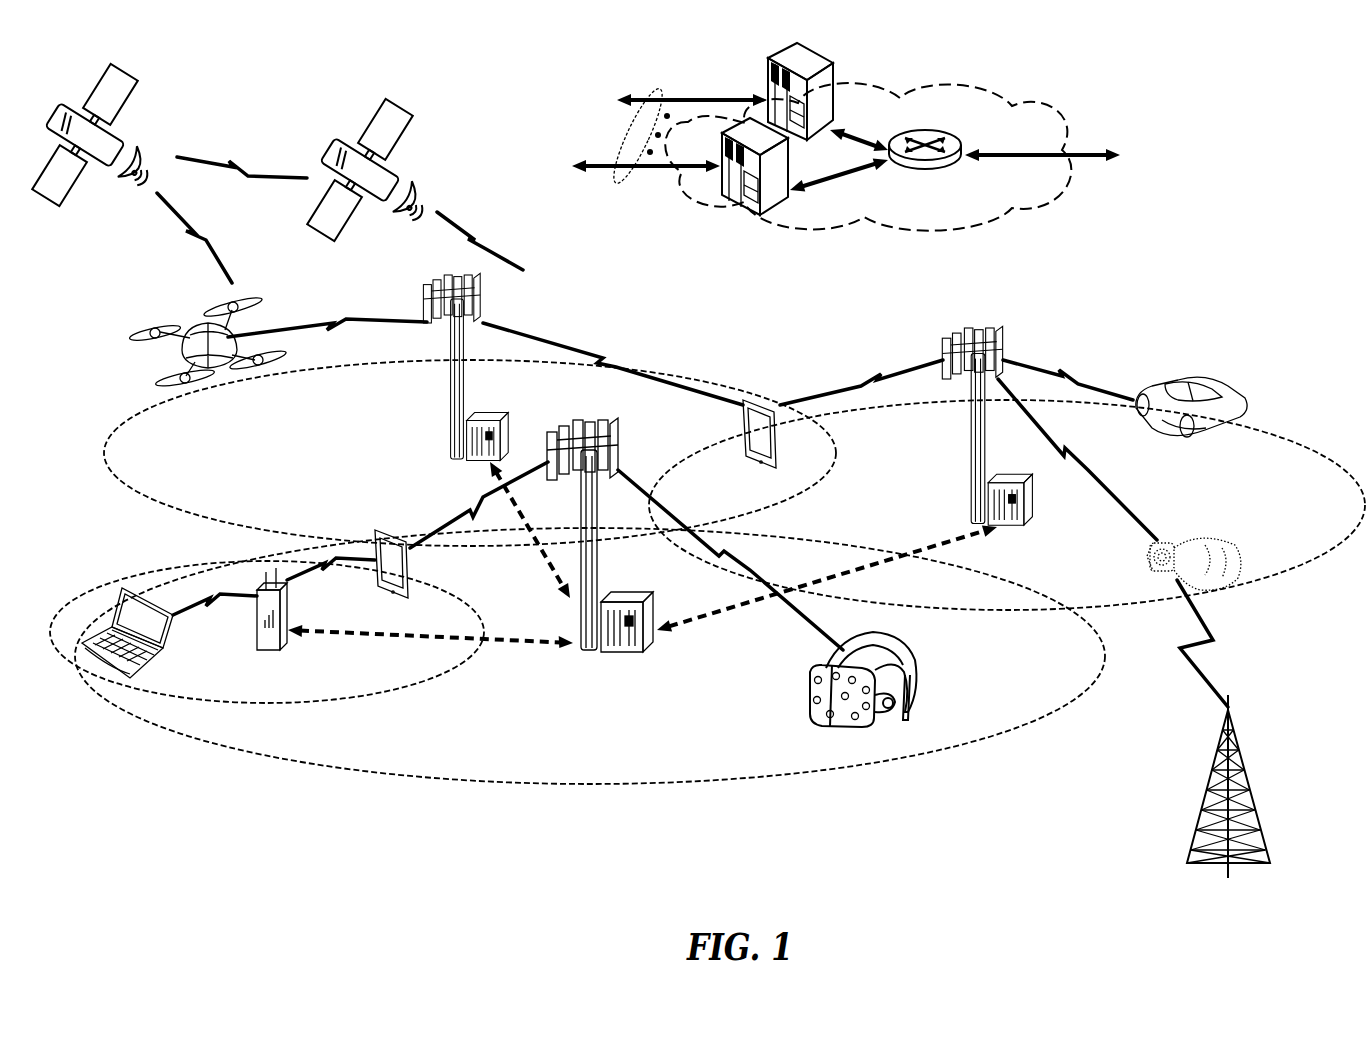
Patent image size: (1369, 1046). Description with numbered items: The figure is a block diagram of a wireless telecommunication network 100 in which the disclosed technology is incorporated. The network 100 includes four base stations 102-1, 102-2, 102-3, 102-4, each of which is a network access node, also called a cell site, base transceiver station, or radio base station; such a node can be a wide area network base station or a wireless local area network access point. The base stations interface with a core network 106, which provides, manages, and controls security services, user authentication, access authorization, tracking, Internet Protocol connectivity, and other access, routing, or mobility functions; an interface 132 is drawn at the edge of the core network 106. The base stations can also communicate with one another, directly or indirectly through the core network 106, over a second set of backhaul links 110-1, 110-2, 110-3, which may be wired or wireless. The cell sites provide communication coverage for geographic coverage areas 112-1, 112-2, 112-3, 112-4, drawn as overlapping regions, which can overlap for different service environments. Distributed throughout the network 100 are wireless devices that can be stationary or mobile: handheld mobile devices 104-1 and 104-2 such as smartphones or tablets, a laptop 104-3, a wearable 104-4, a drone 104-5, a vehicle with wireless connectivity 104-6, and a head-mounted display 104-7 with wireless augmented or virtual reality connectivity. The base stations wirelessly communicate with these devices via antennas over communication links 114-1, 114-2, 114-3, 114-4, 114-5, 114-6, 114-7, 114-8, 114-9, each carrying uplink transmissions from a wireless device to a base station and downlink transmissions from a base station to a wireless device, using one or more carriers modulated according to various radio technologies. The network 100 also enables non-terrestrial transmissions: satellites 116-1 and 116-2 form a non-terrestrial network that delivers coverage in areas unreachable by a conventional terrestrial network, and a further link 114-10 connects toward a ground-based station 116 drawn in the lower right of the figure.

The wireless telecommunication network 100 is at (1266, 141).
The base station 102-1 is at (578, 650).
The base station 102-2 is at (447, 405).
The base station 102-3 is at (968, 437).
The base station 102-4 is at (258, 636).
The handheld mobile device 104-1 is at (412, 577).
The handheld mobile device 104-2 is at (740, 442).
The laptop 104-3 is at (103, 682).
The wearable 104-4 is at (1180, 538).
The drone 104-5 is at (218, 378).
The vehicle with wireless connectivity 104-6 is at (1215, 386).
The head-mounted display 104-7 is at (925, 668).
The core network 106 is at (970, 225).
The backhaul link 110-1 is at (330, 636).
The backhaul link 110-2 is at (900, 566).
The backhaul link 110-3 is at (544, 570).
The geographic coverage area 112-1 is at (505, 784).
The geographic coverage area 112-2 is at (390, 690).
The geographic coverage area 112-3 is at (163, 517).
The geographic coverage area 112-4 is at (1255, 436).
The communication link 114-1 is at (760, 566).
The communication link 114-2 is at (470, 510).
The communication link 114-3 is at (190, 612).
The communication link 114-4 is at (332, 582).
The communication link 114-5 is at (322, 322).
The communication link 114-6 is at (862, 375).
The communication link 114-7 is at (620, 360).
The communication link 114-8 is at (1092, 474).
The communication link 114-9 is at (1066, 372).
The communication link 114-10 is at (1215, 648).
The non-terrestrial base station (ground station) 116 is at (1246, 780).
The satellite 116-1 is at (143, 147).
The satellite 116-2 is at (423, 182).
The interface 132 is at (646, 176).